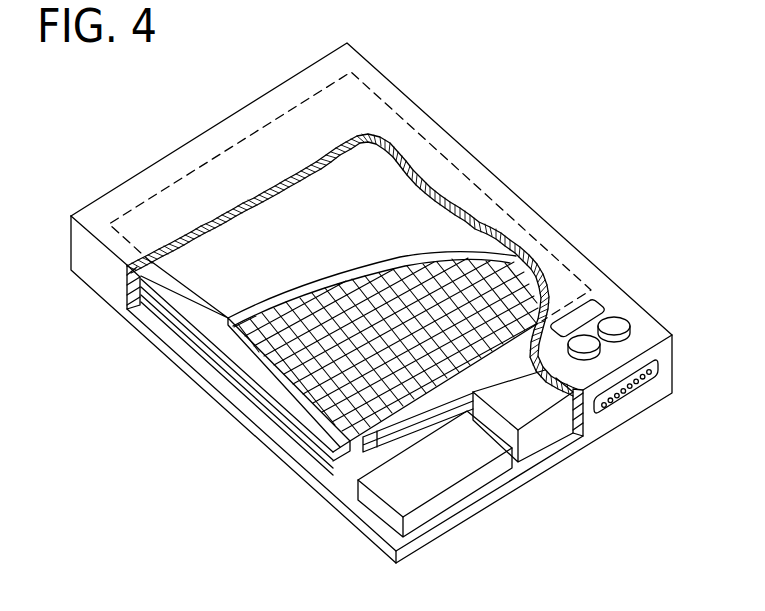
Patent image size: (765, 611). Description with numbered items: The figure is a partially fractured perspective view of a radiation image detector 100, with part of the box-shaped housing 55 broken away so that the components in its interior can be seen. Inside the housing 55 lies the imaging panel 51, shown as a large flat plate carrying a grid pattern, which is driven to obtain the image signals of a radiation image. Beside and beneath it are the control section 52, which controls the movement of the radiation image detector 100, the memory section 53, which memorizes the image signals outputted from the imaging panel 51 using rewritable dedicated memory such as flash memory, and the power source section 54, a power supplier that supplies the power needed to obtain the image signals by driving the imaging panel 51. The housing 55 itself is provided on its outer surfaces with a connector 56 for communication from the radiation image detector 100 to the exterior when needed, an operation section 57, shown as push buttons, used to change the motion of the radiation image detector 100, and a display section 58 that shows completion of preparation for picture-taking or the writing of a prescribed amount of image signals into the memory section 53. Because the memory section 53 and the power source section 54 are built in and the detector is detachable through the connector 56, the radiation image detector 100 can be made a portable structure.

The radiation image detector 100 is at (511, 105).
The imaging panel 51 is at (207, 303).
The control section 52 is at (550, 447).
The memory section 53 is at (457, 502).
The power source section 54 is at (282, 423).
The housing 55 is at (420, 108).
The connector 56 is at (628, 398).
The operation section 57 is at (607, 355).
The display section 58 is at (595, 298).